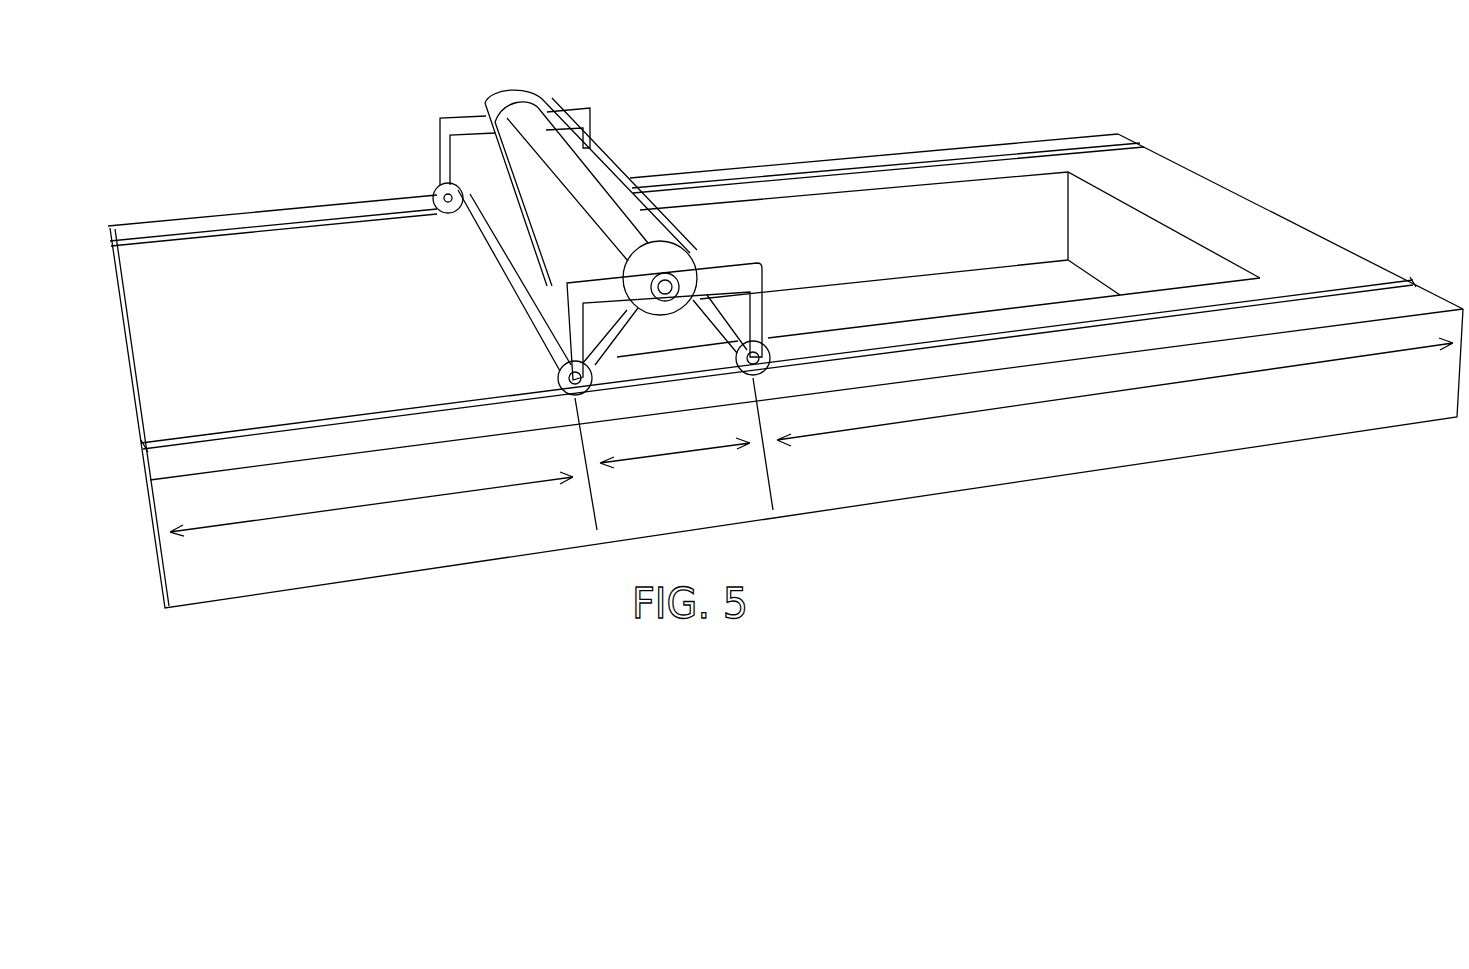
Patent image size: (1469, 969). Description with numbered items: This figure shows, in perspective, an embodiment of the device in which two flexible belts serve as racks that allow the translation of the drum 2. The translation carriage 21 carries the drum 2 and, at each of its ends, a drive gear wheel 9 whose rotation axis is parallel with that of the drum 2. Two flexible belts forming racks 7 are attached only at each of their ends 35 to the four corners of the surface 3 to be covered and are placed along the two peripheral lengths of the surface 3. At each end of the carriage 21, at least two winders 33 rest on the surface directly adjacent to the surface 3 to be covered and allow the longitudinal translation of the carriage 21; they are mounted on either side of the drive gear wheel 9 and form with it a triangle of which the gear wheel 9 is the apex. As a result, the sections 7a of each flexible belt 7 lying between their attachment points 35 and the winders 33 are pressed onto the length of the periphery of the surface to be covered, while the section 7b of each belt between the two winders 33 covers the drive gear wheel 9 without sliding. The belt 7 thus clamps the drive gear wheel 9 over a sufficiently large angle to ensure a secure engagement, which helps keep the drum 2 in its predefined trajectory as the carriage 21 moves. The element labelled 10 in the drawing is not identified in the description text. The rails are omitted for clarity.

The drum 2 is at (585, 177).
The surface to be covered 3 is at (1116, 130).
The flexible belt forming rack 7 is at (357, 423).
The belt sections 7a is at (811, 450).
The belt section 7b is at (675, 475).
The drive gear wheel 9 is at (650, 253).
The rear rail 10 is at (266, 255).
The translation carriage 21 is at (453, 134).
The winders 33 is at (560, 374).
The belt ends 35 is at (160, 443).